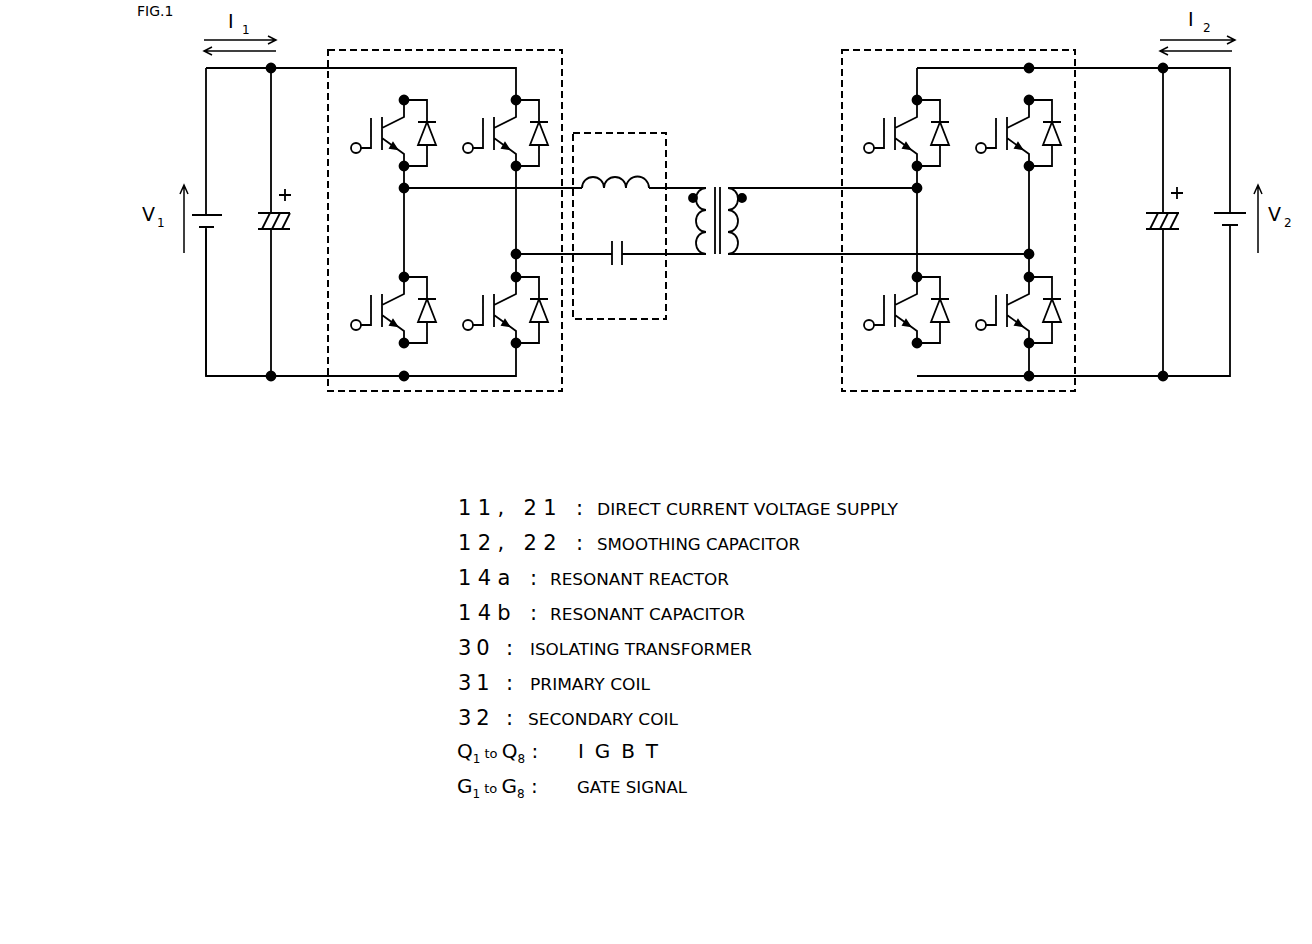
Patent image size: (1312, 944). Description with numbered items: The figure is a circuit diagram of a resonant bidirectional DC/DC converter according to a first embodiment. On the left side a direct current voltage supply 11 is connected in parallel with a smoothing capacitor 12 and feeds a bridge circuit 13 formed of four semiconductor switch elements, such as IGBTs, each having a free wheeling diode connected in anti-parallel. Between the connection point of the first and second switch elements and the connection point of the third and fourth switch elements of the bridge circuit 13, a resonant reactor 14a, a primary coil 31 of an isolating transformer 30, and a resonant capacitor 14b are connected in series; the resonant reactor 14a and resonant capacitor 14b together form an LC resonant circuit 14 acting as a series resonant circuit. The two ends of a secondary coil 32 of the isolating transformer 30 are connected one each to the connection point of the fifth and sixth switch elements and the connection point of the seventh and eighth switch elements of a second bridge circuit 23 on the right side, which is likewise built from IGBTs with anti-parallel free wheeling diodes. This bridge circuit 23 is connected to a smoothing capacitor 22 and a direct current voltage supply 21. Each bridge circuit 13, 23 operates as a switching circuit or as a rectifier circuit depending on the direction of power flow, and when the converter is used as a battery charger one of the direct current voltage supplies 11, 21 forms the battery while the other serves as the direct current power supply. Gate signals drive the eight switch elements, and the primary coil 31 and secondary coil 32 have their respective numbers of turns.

The direct current voltage supply 11 is at (198, 235).
The smoothing capacitor 12 is at (265, 237).
The bridge circuit 13 is at (337, 391).
The LC resonant circuit 14 is at (641, 258).
The resonant reactor 14a is at (615, 170).
The resonant capacitor 14b is at (619, 268).
The direct current voltage supply 21 is at (1223, 235).
The smoothing capacitor 22 is at (1150, 237).
The bridge circuit 23 is at (1063, 392).
The isolating transformer 30 is at (718, 191).
The primary coil 31 is at (687, 215).
The secondary coil 32 is at (737, 220).